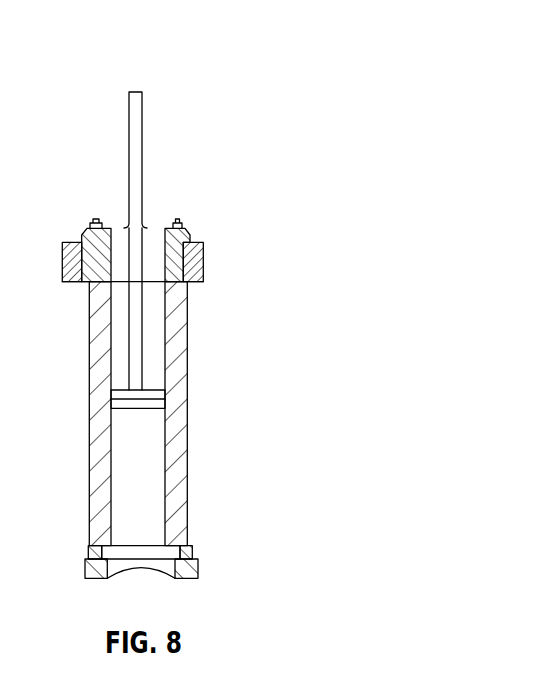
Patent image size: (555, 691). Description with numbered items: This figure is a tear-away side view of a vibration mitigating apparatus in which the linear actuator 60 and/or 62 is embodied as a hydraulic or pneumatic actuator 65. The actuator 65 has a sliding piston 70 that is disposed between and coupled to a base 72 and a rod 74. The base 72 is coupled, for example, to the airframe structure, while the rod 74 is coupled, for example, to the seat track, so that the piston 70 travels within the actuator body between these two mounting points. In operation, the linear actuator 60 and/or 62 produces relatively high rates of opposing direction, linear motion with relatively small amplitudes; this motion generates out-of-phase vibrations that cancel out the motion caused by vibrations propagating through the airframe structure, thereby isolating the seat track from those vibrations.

The linear actuator 60 is at (315, 58).
The linear actuator 62 is at (263, 301).
The hydraulic or pneumatic actuator 65 is at (258, 167).
The sliding piston 70 is at (153, 400).
The base 72 is at (87, 566).
The rod 74 is at (144, 133).